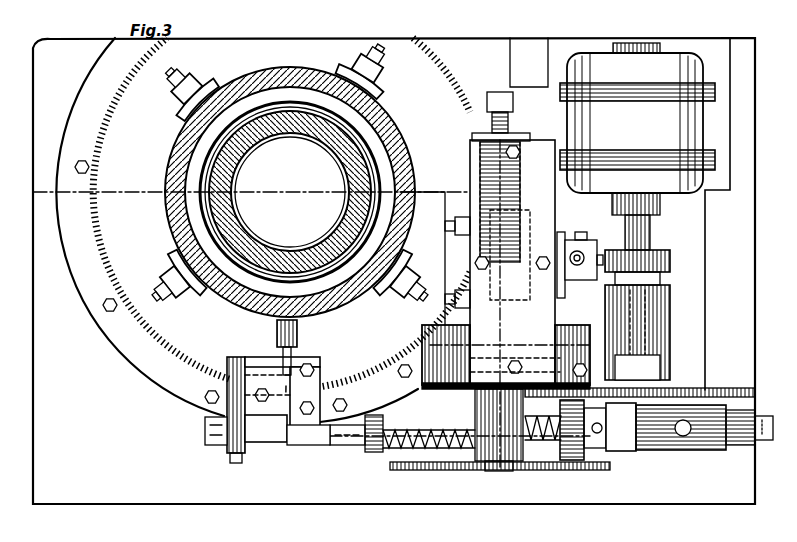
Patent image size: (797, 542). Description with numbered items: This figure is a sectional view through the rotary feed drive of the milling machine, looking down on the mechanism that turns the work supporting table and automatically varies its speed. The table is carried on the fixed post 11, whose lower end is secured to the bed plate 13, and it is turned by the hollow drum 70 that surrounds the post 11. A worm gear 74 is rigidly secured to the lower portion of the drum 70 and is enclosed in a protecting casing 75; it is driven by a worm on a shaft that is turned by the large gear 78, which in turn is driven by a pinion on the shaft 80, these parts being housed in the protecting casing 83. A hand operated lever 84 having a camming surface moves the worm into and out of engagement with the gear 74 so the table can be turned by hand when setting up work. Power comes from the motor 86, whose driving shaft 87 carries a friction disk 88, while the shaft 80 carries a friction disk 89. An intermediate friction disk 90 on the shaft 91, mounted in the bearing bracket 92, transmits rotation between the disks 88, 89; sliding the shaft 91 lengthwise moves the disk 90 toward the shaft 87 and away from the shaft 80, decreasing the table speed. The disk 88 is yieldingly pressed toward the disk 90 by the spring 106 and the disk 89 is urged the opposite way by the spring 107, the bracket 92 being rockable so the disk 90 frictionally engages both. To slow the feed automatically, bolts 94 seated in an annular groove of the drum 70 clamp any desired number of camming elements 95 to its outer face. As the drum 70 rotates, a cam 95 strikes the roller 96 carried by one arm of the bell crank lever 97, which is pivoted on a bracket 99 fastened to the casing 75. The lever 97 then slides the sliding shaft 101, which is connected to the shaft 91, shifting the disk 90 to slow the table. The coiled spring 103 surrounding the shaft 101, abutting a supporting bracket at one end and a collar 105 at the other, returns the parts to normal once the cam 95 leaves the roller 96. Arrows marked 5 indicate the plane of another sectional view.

The section line 5 is at (16, 160).
The post 11 is at (350, 164).
The bed plate 13 is at (108, 500).
The hollow drum 70 is at (172, 222).
The worm gear 74 is at (102, 270).
The protecting casing 75 is at (130, 365).
The large gear 78 is at (412, 350).
The shaft 80 is at (472, 400).
The protecting casing 83 is at (440, 330).
The hand operated lever 84 is at (578, 257).
The motor 86 is at (688, 58).
The driving shaft 87 is at (650, 292).
The friction disk 88 is at (720, 388).
The friction disk 89 is at (600, 472).
The intermediate friction disk 90 is at (605, 452).
The shaft 91 is at (740, 448).
The bearing bracket 92 is at (706, 455).
The bolts 94 is at (372, 60).
The camming elements 95 is at (200, 100).
The roller 96 is at (298, 332).
The bell crank lever 97 is at (215, 447).
The bracket 99 is at (308, 385).
The sliding shaft 101 is at (348, 446).
The coiled spring 103 is at (452, 440).
The collar 105 is at (378, 455).
The spring 106 is at (653, 332).
The spring 107 is at (480, 175).